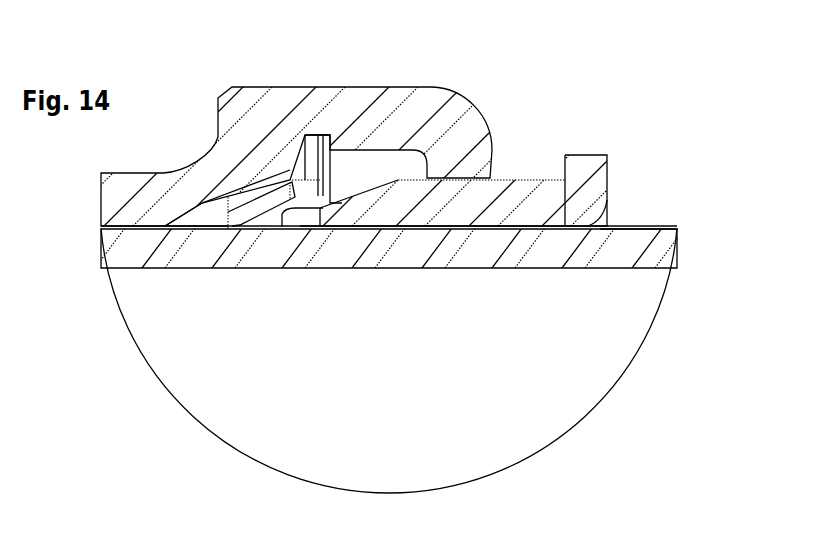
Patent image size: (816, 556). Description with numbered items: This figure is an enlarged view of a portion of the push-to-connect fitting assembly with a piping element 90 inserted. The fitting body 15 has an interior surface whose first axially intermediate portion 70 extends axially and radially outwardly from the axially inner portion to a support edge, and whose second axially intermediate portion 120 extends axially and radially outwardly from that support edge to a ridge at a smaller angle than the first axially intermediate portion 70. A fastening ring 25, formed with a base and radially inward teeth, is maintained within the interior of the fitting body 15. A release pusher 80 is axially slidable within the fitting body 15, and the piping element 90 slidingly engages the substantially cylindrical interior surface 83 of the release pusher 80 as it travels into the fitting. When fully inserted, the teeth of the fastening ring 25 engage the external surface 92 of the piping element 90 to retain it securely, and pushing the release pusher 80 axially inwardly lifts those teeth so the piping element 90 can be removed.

The fitting body 15 is at (402, 85).
The fastening ring 25 is at (313, 150).
The second axially intermediate portion 120 is at (253, 190).
The first axially intermediate portion 70 is at (198, 213).
The release pusher 80 is at (500, 205).
The interior surface of the release pusher 83 is at (550, 223).
The piping element 90 is at (637, 265).
The external surface of the piping element 92 is at (637, 223).